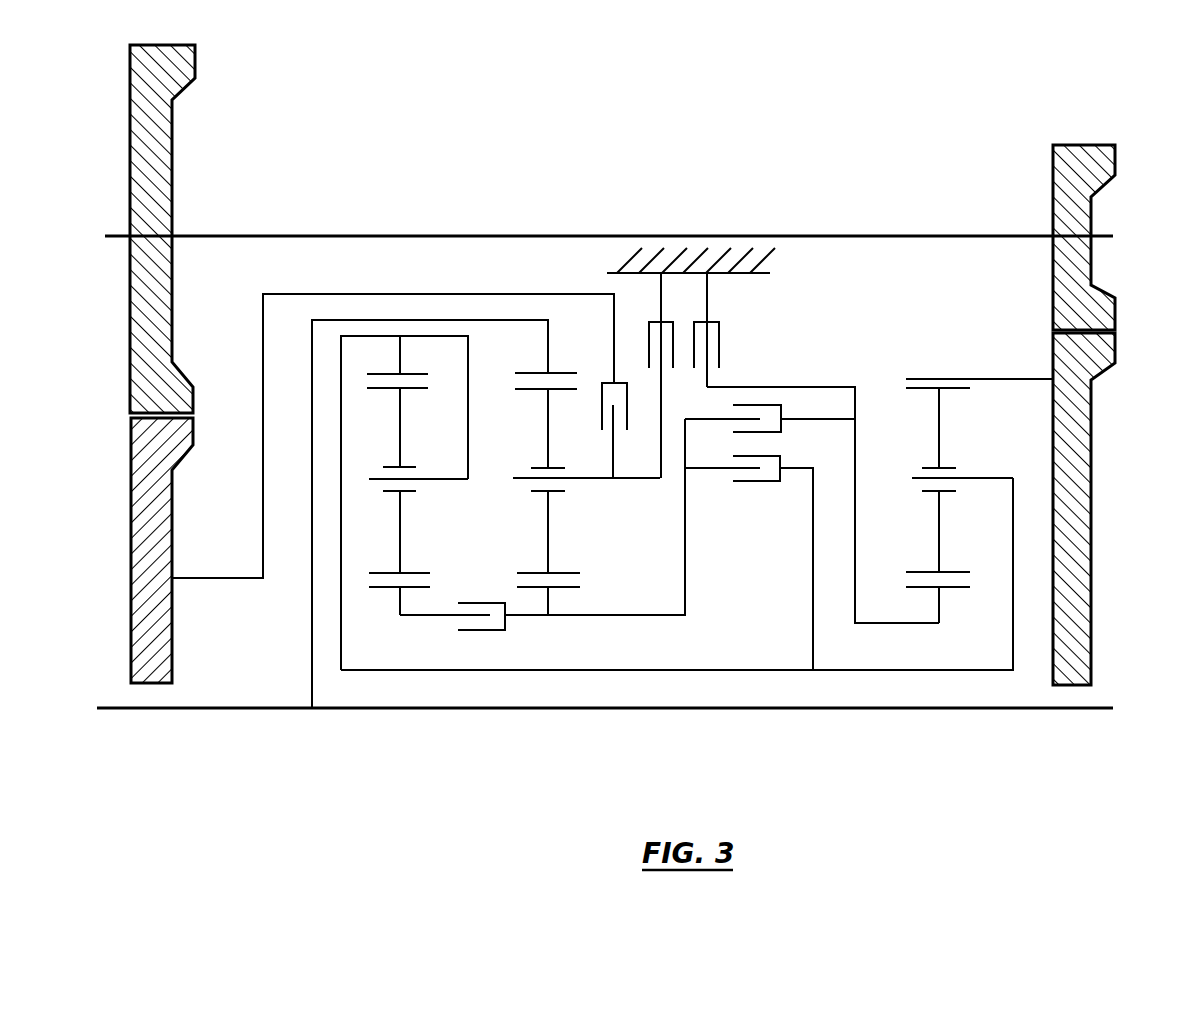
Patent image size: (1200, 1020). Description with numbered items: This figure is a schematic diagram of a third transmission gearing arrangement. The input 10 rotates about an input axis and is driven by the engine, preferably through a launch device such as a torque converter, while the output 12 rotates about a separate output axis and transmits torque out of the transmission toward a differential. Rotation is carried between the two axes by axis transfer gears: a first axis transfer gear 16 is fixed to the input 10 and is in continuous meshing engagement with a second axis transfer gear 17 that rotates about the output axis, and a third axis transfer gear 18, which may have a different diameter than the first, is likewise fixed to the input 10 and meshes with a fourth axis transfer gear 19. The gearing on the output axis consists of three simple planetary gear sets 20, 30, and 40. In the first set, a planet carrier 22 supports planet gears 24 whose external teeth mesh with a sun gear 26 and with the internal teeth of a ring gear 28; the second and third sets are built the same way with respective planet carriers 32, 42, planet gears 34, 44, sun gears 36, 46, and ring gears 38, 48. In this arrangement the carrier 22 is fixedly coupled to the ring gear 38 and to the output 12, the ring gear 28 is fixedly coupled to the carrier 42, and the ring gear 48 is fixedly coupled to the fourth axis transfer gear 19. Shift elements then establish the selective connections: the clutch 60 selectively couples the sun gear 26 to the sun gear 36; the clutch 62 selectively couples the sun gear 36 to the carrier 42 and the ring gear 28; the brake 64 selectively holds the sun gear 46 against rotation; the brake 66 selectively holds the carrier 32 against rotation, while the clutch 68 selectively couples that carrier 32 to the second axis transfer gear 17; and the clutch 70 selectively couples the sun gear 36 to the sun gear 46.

The input 10 is at (420, 236).
The output 12 is at (712, 708).
The first axis transfer gear 16 is at (172, 152).
The second axis transfer gear 17 is at (160, 665).
The third axis transfer gear 18 is at (1093, 262).
The fourth axis transfer gear 19 is at (1093, 482).
The first planetary gear set 20 is at (411, 555).
The planet carrier 22 is at (430, 480).
The planet gears 24 is at (400, 433).
The sun gear 26 is at (400, 617).
The ring gear 28 is at (400, 342).
The second planetary gear set 30 is at (579, 537).
The planet carrier 32 is at (578, 480).
The planet gears 34 is at (548, 438).
The sun gear 36 is at (548, 618).
The ring gear 38 is at (548, 345).
The third planetary gear set 40 is at (962, 555).
The planet carrier 42 is at (987, 478).
The planet gears 44 is at (939, 430).
The sun gear 46 is at (940, 625).
The ring gear 48 is at (975, 379).
The clutch 60 is at (452, 601).
The clutch 62 is at (737, 484).
The brake 64 is at (723, 330).
The brake 66 is at (648, 375).
The clutch 68 is at (626, 430).
The clutch 70 is at (752, 428).